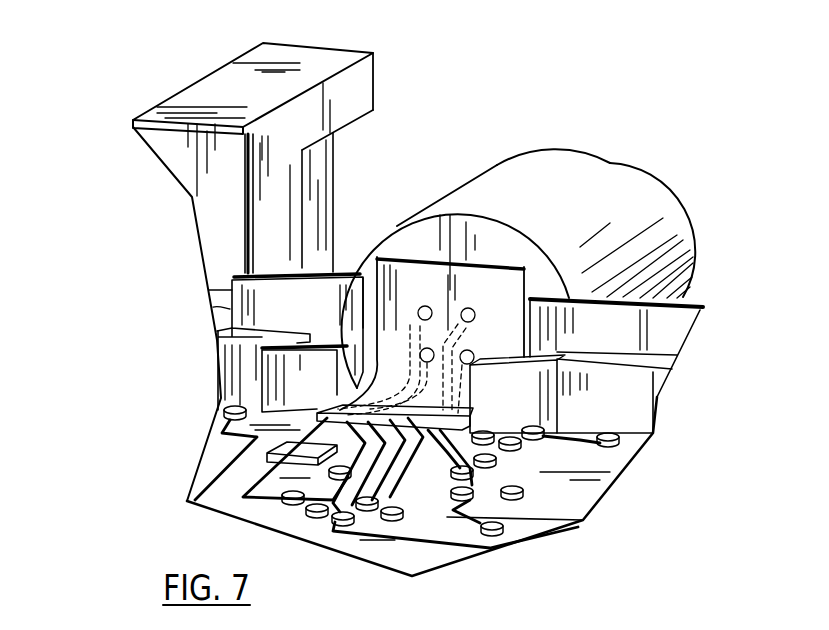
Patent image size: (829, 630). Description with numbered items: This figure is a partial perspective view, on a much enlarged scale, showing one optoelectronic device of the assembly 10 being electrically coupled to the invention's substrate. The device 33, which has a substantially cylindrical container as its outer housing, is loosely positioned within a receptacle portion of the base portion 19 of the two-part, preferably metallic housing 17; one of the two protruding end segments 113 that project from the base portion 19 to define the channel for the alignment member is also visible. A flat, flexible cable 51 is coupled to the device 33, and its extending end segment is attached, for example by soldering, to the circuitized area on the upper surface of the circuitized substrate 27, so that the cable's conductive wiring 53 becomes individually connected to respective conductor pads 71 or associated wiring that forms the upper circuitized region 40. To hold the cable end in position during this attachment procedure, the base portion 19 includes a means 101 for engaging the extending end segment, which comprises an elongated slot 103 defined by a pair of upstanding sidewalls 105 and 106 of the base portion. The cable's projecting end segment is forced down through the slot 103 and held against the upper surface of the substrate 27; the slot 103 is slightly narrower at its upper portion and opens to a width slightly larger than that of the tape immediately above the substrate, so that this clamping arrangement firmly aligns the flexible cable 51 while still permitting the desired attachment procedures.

The assembly 10 is at (120, 132).
The housing 17 is at (165, 95).
The base portion 19 is at (222, 88).
The substrate member 27 is at (208, 423).
The optoelectronic device 33 is at (513, 153).
The upper circuitized region 40 is at (218, 458).
The flat flexible cable 51 is at (432, 273).
The conductive wiring 53 is at (417, 320).
The conductor pads 71 is at (337, 388).
The means for engaging 101 is at (340, 322).
The elongated slot 103 is at (388, 332).
The upstanding sidewall 105 is at (253, 365).
The upstanding sidewall 106 is at (535, 345).
The protruding end segment 113 is at (328, 170).